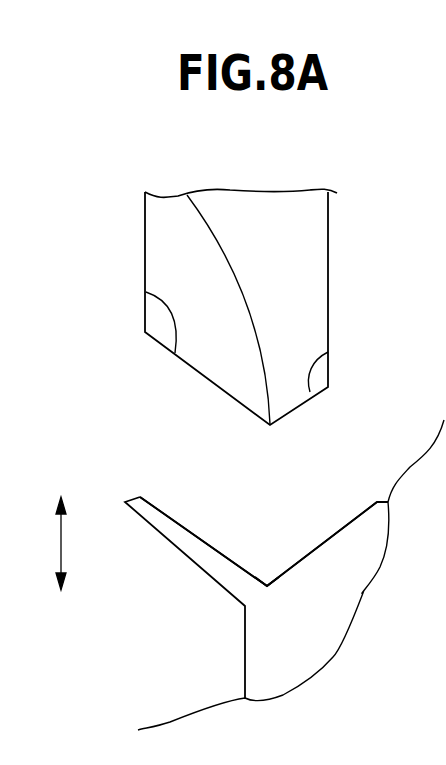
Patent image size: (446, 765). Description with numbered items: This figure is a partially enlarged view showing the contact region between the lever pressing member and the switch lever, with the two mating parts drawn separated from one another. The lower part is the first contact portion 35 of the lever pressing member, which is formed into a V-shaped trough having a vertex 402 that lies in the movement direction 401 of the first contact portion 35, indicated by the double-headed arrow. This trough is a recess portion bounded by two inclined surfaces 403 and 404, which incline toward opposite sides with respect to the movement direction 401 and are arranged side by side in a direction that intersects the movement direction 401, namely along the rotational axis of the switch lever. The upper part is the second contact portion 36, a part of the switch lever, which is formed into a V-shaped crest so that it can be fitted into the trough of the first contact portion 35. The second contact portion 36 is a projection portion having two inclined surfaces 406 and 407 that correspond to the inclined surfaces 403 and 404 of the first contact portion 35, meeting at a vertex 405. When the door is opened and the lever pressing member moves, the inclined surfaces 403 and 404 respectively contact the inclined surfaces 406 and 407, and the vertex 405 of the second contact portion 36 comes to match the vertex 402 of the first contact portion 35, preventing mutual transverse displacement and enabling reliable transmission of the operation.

The second contact portion 36 is at (273, 217).
The vertex 405 is at (187, 195).
The inclined surface 406 is at (146, 292).
The inclined surface 407 is at (328, 352).
The first contact portion 35 is at (222, 570).
The inclined surface 403 is at (195, 533).
The vertex 402 is at (265, 583).
The inclined surface 404 is at (317, 545).
The movement direction 401 is at (83, 543).